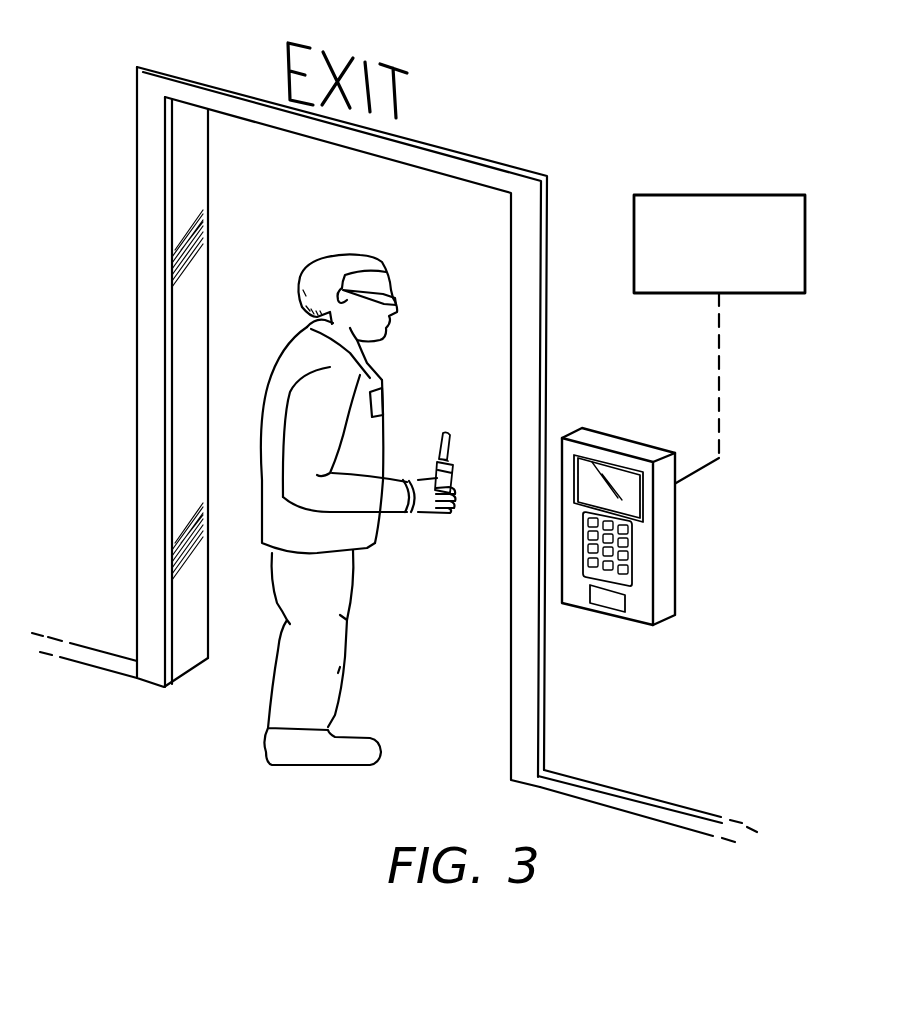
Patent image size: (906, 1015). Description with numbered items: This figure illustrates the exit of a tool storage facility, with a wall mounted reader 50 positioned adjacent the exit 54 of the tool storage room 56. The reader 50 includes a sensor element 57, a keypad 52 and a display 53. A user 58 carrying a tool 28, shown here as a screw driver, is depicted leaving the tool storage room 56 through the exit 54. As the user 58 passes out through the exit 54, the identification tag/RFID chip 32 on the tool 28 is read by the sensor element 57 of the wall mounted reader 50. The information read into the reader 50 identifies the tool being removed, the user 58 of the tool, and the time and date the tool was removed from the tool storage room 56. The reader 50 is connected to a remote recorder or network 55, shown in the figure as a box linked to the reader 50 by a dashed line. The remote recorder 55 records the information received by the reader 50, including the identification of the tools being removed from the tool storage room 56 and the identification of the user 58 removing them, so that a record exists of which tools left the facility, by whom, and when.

The tool 28 is at (442, 445).
The identification tag/RFID chip 32 is at (457, 478).
The reader 50 is at (644, 485).
The keypad 52 is at (630, 555).
The display 53 is at (636, 493).
The exit 54 is at (263, 188).
The remote recorder or network 55 is at (664, 205).
The tool storage room 56 is at (278, 34).
The sensor element 57 is at (614, 600).
The user 58 is at (268, 388).